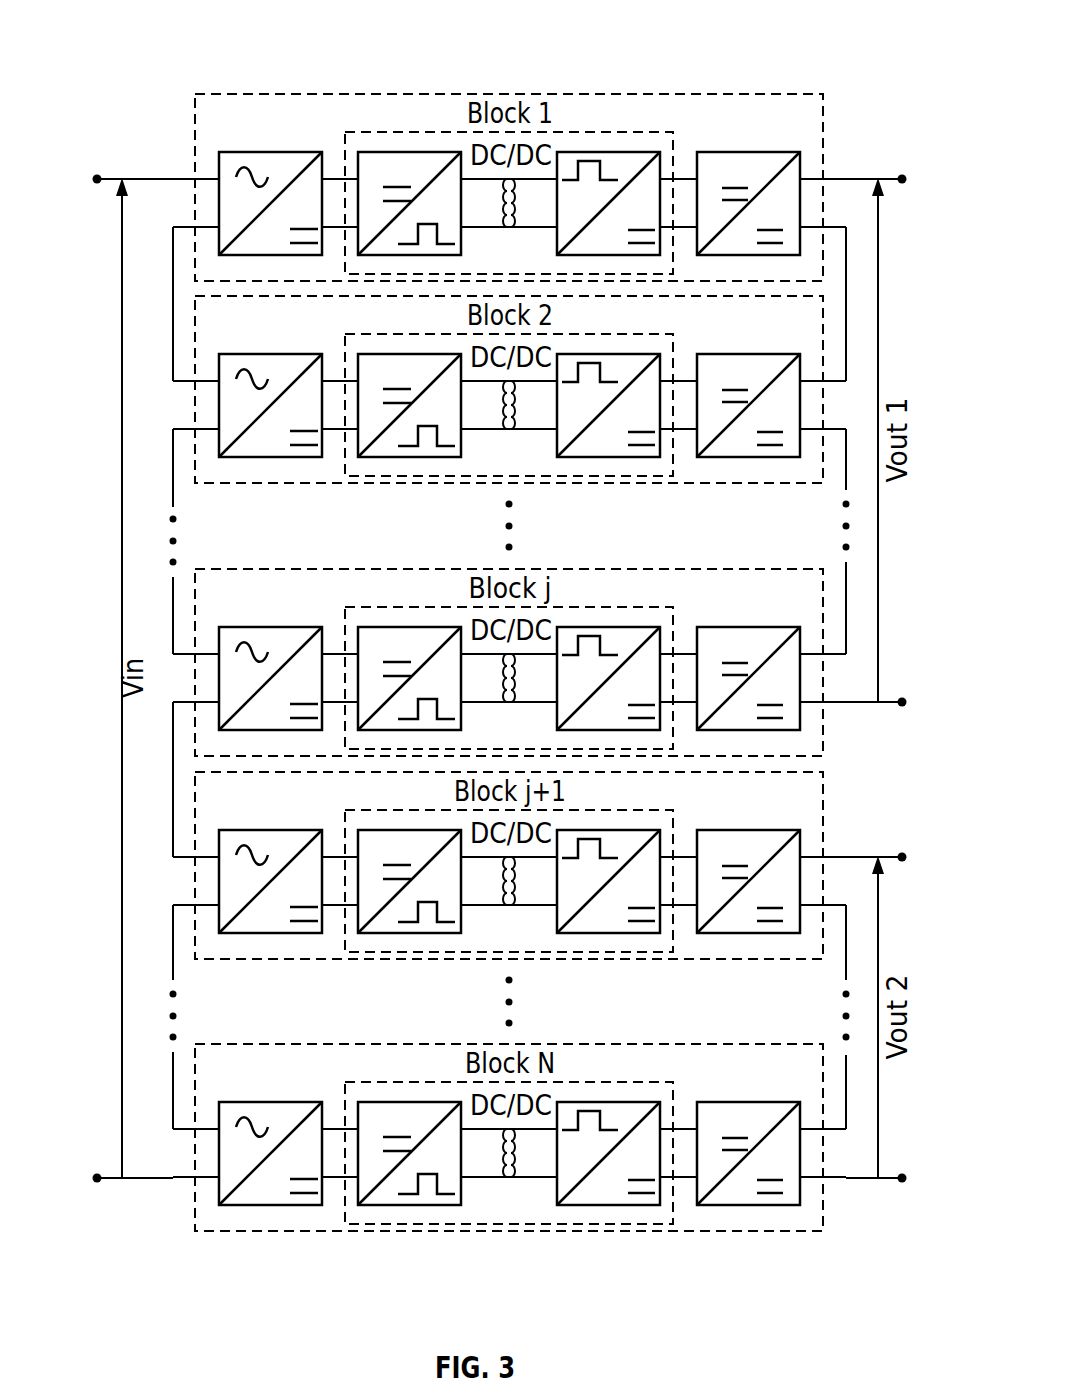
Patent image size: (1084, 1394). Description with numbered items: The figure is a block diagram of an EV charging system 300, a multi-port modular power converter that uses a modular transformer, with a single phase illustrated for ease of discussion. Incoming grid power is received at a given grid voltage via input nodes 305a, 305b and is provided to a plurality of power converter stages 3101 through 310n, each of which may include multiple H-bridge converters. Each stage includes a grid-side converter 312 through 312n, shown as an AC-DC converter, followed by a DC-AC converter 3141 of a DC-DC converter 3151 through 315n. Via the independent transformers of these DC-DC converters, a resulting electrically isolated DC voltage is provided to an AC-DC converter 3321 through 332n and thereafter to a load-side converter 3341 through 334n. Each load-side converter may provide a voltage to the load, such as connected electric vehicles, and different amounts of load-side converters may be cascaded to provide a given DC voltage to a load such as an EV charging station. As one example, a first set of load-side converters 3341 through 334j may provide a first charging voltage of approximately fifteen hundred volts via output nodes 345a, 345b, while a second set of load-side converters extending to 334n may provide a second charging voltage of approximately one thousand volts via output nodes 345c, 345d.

The EV charging system 300 is at (146, 42).
The power converter stage 3101 is at (322, 94).
The power converter stage 310n is at (638, 1044).
The grid-side converter 312 is at (275, 152).
The grid-side converter 312n is at (228, 1102).
The DC-AC converter 3141 is at (427, 152).
The DC-DC converter 3151 is at (623, 132).
The DC-DC converter 315n is at (382, 1082).
The AC-DC converter 3321 is at (650, 152).
The AC-DC converter 332n is at (590, 1102).
The load-side converter 3341 is at (750, 152).
The load-side converter 334j is at (737, 627).
The load-side converter 334n is at (735, 1102).
The input node 305a is at (97, 175).
The input node 305b is at (97, 1182).
The output node 345a is at (902, 175).
The output node 345b is at (902, 706).
The output node 345c is at (902, 853).
The output node 345d is at (902, 1182).